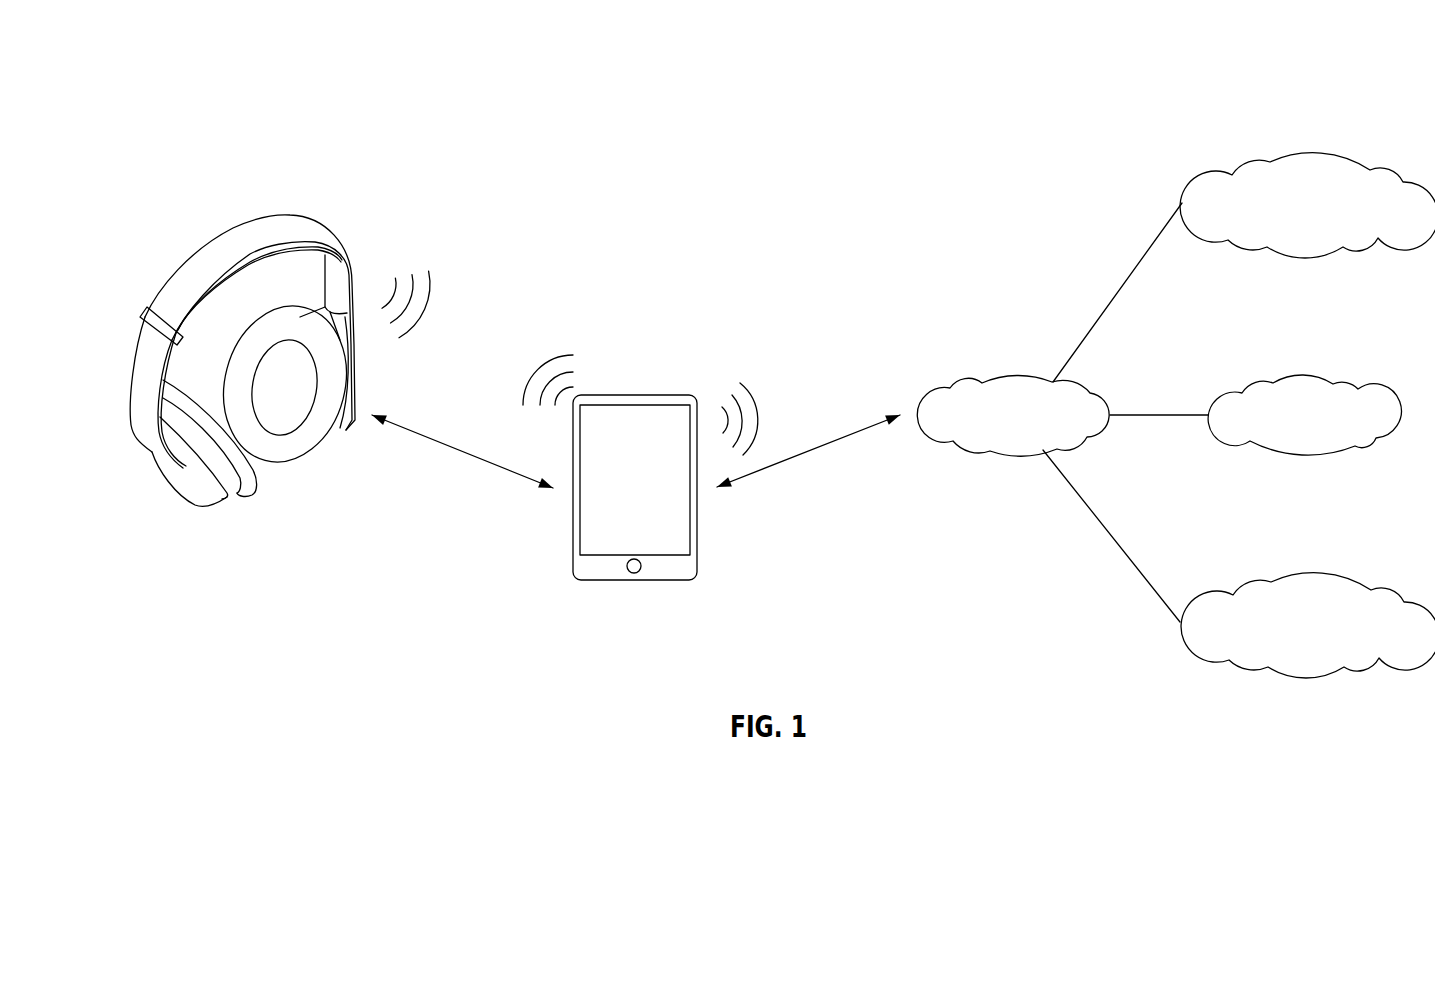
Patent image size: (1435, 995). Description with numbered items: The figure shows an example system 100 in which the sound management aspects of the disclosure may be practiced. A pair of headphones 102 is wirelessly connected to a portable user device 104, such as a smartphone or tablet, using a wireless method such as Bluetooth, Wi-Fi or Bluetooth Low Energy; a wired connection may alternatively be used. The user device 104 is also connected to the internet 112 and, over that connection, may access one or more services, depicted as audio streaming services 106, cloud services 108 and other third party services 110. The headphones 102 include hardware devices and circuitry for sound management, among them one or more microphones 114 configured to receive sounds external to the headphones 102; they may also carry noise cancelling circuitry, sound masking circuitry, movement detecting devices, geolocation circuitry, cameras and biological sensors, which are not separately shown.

The system 100 is at (187, 108).
The headphones 102 is at (282, 214).
The portable user device 104 is at (635, 394).
The audio streaming services 106 is at (1356, 158).
The cloud services 108 is at (1346, 380).
The third party services 110 is at (1362, 580).
The internet 112 is at (1013, 379).
The microphones 114 is at (200, 507).